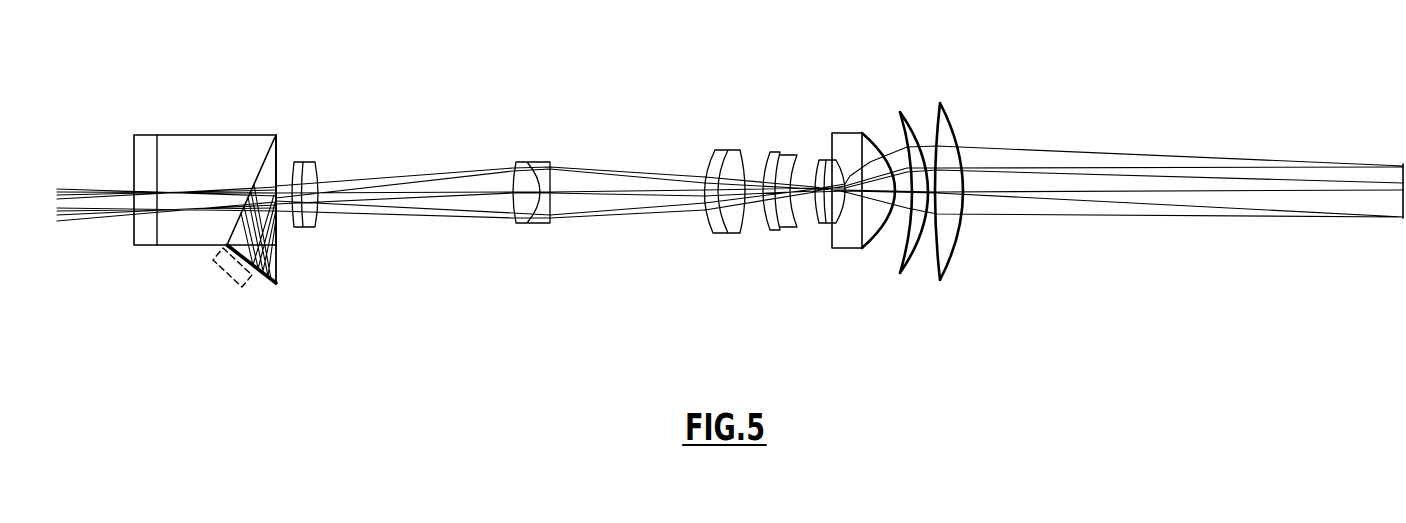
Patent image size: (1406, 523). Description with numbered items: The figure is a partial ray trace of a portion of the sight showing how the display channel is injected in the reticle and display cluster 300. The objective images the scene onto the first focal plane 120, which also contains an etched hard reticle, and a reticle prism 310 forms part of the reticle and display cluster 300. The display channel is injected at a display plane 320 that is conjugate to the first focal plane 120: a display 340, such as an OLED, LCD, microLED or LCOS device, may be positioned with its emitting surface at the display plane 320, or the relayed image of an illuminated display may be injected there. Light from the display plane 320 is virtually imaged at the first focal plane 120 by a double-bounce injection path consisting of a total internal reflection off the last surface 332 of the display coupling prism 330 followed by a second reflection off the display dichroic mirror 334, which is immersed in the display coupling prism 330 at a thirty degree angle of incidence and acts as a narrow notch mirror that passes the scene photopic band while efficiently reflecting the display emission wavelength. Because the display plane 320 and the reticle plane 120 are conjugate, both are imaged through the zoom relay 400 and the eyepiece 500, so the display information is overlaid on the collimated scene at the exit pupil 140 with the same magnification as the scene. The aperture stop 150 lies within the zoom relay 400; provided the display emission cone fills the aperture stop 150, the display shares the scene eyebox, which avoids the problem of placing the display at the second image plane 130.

The first focal plane 120 is at (157, 134).
The second image plane 130 is at (809, 157).
The exit pupil 140 is at (1393, 237).
The aperture stop 150 is at (563, 141).
The reticle and display cluster 300 is at (282, 53).
The reticle prism 310 is at (145, 238).
The display plane 320 is at (261, 291).
The display coupling prism 330 is at (173, 226).
The last surface of display coupling prism 332 is at (279, 261).
The display dichroic mirror 334 is at (268, 157).
The display 340 is at (231, 282).
The zoom relay 400 is at (82, 165).
The eyepiece 500 is at (977, 285).